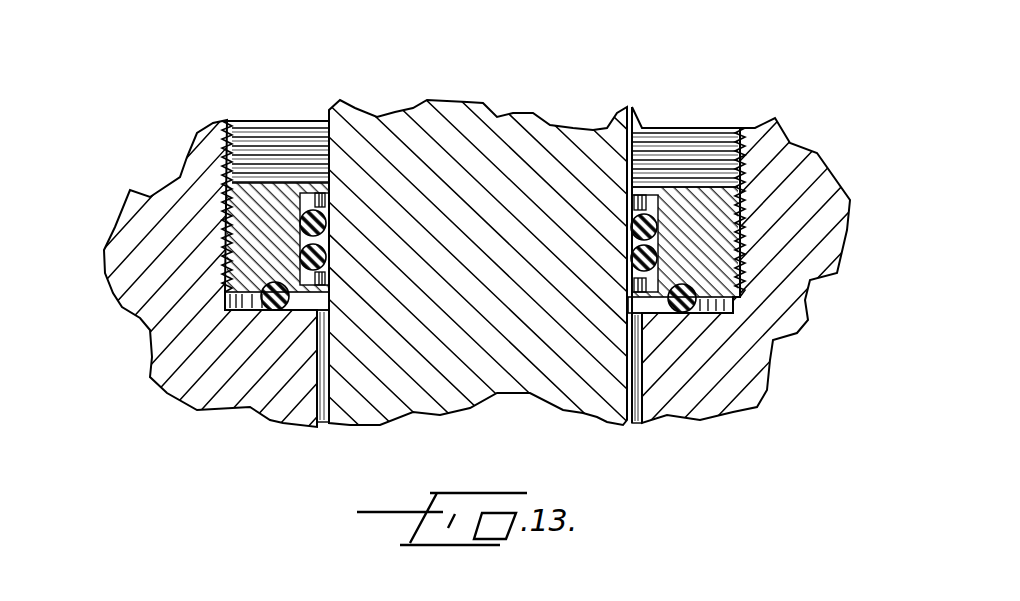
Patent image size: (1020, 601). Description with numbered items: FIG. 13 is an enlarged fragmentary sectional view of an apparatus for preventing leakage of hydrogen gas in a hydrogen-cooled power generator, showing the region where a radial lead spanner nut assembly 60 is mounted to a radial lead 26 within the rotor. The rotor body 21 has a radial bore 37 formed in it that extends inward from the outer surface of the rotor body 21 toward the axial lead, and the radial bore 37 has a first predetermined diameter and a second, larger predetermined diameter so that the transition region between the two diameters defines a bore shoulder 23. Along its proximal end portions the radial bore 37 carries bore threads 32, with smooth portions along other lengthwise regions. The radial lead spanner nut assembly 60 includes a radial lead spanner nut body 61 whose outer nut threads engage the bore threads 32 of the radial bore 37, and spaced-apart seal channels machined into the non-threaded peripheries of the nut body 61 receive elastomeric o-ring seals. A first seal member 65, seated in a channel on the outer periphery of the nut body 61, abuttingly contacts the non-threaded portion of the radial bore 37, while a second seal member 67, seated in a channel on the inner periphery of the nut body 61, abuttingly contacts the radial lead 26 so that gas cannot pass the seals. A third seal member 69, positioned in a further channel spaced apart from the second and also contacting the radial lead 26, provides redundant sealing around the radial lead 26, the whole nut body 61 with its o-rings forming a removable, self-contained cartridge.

The rotor body 21 is at (133, 235).
The bore shoulder 23 is at (730, 302).
The radial lead 26 is at (566, 128).
The bore threads 32 is at (220, 190).
The radial bore 37 is at (628, 368).
The radial lead spanner nut assembly 60 is at (702, 103).
The radial lead spanner nut body 61 is at (267, 212).
The first seal member 65 is at (262, 310).
The second seal member 67 is at (332, 263).
The third seal member 69 is at (327, 225).